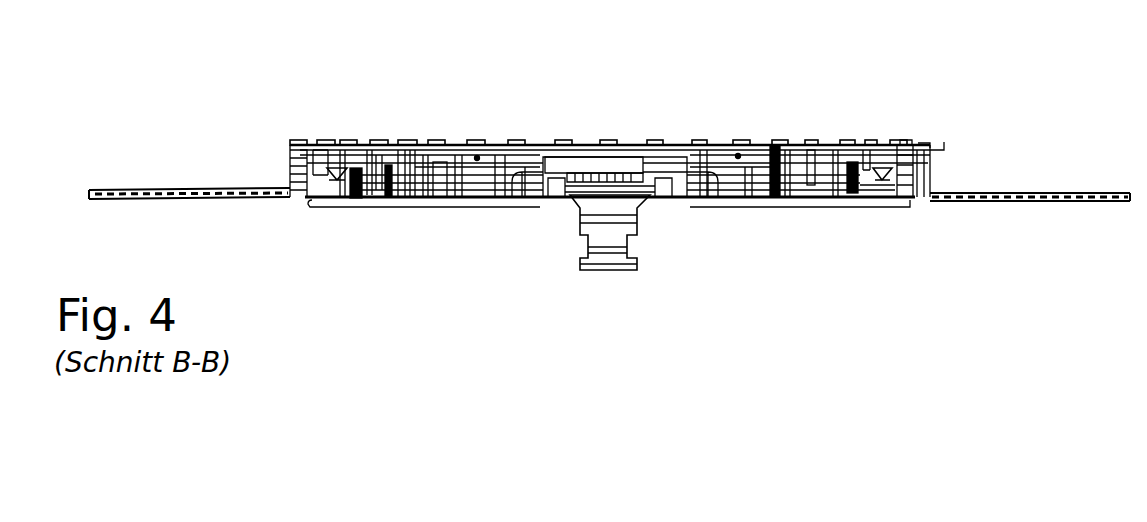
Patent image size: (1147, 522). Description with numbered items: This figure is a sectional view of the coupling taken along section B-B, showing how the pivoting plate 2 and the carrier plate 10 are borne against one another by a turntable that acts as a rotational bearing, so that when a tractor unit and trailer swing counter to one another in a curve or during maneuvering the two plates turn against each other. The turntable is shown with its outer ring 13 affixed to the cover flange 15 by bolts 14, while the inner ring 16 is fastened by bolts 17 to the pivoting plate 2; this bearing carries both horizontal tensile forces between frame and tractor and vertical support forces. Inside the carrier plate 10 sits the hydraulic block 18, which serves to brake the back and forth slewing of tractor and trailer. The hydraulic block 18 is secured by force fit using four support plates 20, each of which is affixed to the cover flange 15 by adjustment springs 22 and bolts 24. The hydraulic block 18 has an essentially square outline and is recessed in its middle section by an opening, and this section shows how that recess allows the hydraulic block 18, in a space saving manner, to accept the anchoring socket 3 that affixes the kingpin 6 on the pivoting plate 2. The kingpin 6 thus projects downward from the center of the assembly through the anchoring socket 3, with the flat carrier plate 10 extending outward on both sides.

The pivoting plate 2 is at (767, 202).
The anchoring socket 3 is at (530, 203).
The kingpin 6 is at (637, 268).
The carrier plate 10 is at (136, 189).
The outer ring 13 is at (943, 142).
The bolts 14 is at (905, 142).
The cover flange 15 is at (927, 142).
The inner ring 16 is at (880, 203).
The bolts 17 is at (863, 203).
The hydraulic block 18 is at (723, 142).
The support plates 20 is at (425, 203).
The adjustment springs 22 is at (416, 142).
The bolts 24 is at (402, 203).